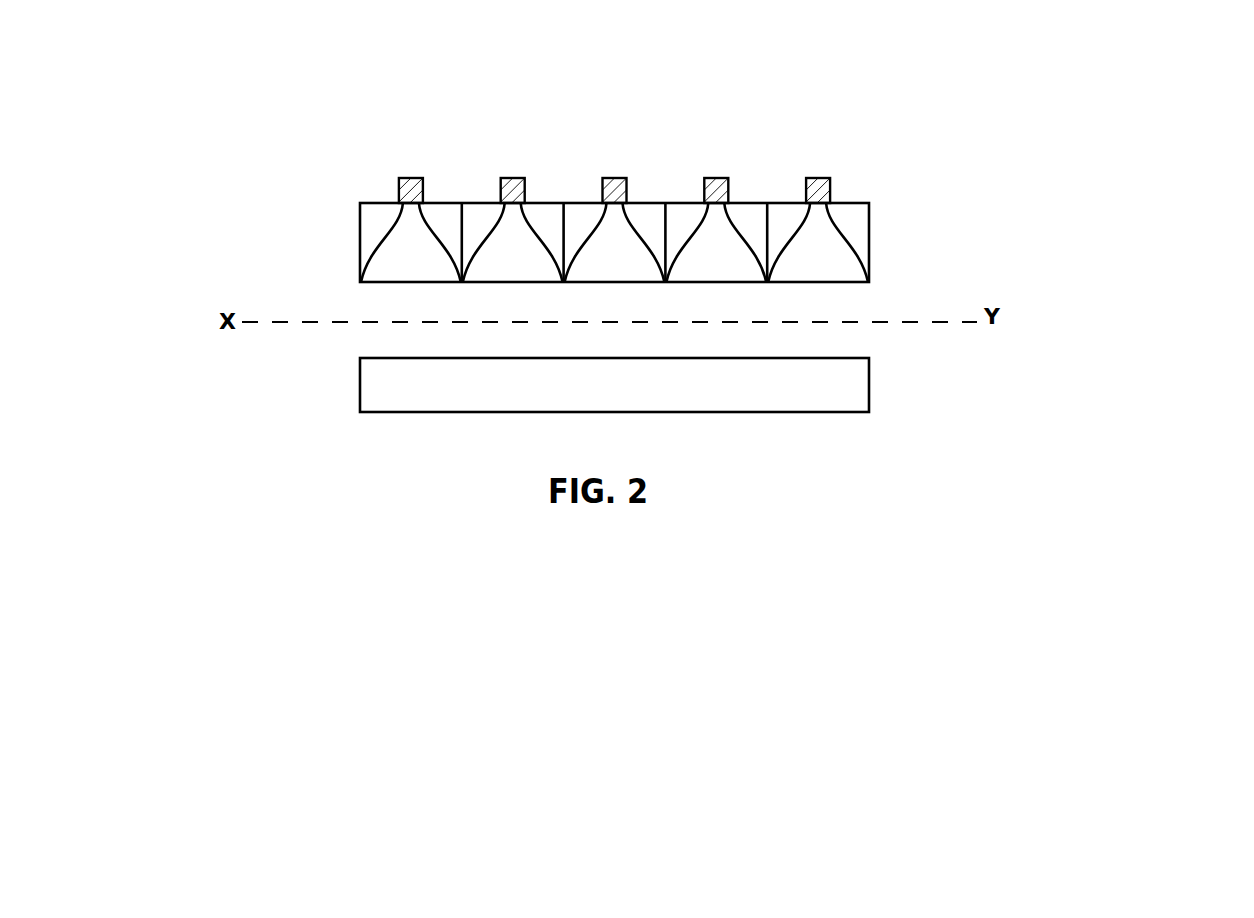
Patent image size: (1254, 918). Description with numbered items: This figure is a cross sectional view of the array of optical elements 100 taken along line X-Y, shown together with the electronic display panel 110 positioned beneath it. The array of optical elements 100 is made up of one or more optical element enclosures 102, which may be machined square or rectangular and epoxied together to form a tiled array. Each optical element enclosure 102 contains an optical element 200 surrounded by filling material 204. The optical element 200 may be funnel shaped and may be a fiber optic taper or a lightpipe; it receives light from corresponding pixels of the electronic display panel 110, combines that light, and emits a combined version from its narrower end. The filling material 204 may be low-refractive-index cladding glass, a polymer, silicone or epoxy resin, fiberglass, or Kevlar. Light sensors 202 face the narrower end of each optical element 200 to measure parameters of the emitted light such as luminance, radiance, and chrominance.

The array of optical elements 100 is at (366, 147).
The optical element enclosure 102 is at (1064, 226).
The electronic display panel 110 is at (870, 382).
The optical element 200 is at (722, 260).
The light sensor 202 is at (600, 132).
The filling material 204 is at (376, 221).